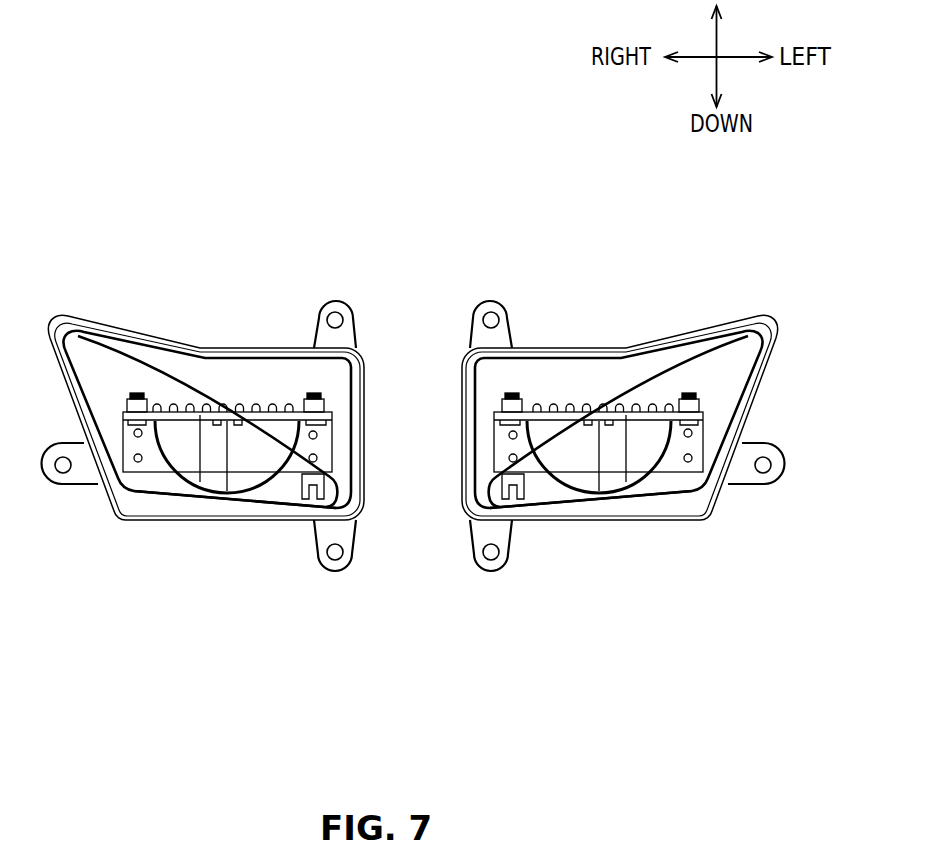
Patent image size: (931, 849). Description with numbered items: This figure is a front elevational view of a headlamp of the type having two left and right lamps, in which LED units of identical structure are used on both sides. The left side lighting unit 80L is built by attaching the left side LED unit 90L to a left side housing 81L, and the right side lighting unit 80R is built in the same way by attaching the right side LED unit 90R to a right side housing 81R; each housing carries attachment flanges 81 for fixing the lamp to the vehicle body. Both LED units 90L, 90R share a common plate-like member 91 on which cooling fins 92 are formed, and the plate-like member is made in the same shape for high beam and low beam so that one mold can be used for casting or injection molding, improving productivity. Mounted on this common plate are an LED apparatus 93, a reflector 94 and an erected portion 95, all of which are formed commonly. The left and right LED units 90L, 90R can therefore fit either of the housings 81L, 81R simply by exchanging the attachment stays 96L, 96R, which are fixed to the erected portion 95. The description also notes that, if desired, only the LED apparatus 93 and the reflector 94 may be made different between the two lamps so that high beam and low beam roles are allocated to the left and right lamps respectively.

The right side lighting unit 80R is at (203, 248).
The left side lighting unit 80L is at (634, 249).
The attachment flange 81 is at (333, 303).
The right side housing 81R is at (337, 378).
The left side housing 81L is at (488, 377).
The right side LED unit 90R is at (275, 377).
The left side LED unit 90L is at (562, 377).
The plate-like member 91 is at (199, 478).
The cooling fins 92 is at (180, 407).
The LED apparatus 93 is at (241, 441).
The reflector 94 is at (273, 474).
The erected portion 95 is at (153, 463).
The right attachment stay 96R is at (334, 481).
The left attachment stay 96L is at (493, 486).